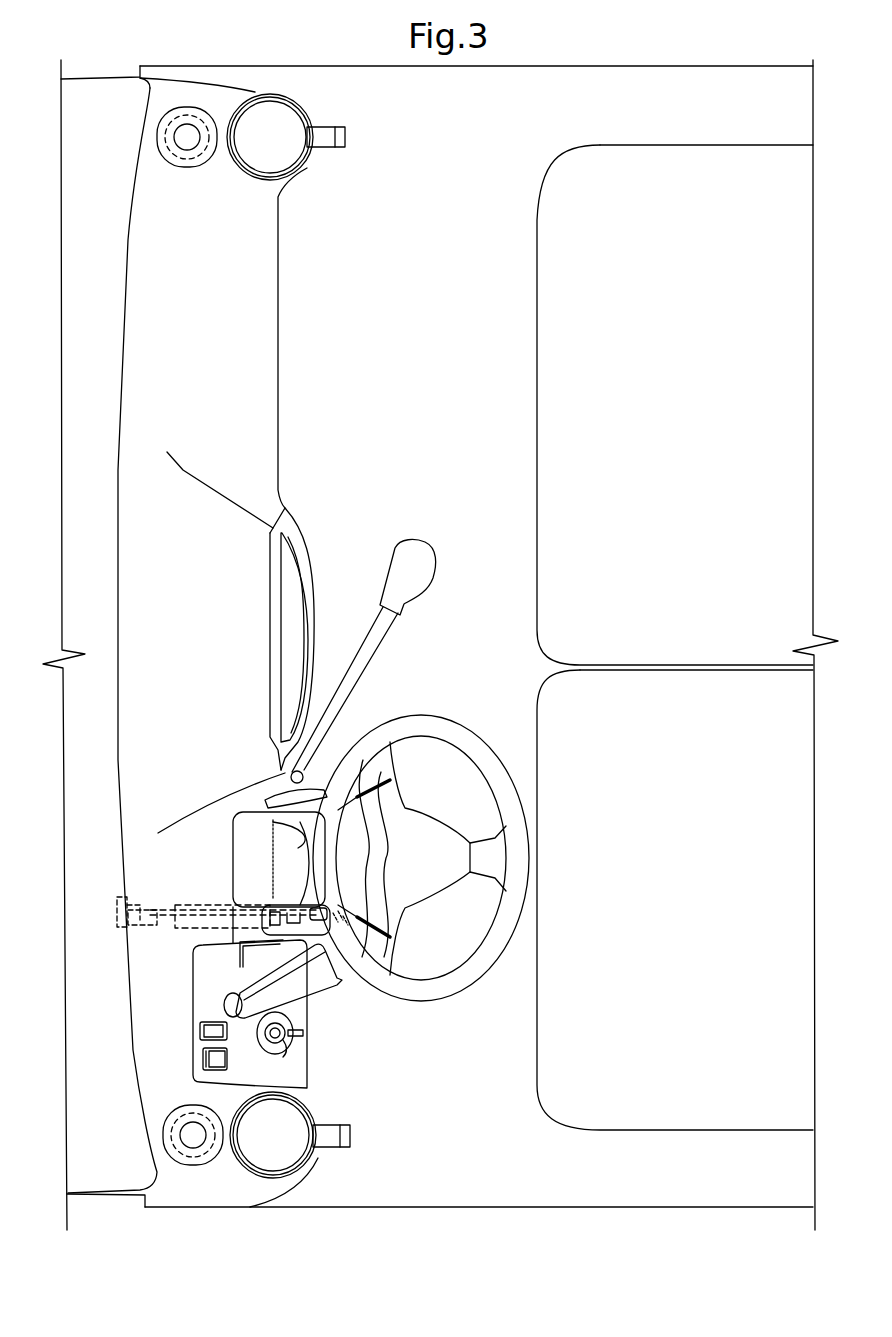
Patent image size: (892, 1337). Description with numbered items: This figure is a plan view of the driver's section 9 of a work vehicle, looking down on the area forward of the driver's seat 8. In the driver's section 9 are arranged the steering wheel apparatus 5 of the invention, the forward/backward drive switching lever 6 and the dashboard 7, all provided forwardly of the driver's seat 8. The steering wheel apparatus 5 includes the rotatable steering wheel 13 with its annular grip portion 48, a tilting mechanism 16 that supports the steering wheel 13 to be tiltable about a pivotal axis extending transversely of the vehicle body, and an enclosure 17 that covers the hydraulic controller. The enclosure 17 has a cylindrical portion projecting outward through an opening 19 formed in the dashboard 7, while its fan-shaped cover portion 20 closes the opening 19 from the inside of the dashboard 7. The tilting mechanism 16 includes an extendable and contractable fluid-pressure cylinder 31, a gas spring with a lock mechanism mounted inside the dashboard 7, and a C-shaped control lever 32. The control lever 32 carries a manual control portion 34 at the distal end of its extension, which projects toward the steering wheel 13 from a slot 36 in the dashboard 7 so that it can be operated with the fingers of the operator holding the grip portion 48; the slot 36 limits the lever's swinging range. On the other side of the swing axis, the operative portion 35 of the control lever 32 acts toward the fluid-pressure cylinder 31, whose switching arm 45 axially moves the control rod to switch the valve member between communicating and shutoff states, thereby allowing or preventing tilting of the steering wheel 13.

The steering wheel apparatus 5 is at (240, 733).
The forward/backward drive switching lever 6 is at (227, 997).
The dashboard 7 is at (262, 404).
The driver's seat 8 is at (548, 317).
The driver's section 9 is at (447, 1143).
The steering wheel 13 is at (510, 852).
The tilting mechanism 16 is at (340, 918).
The enclosure 17 is at (307, 858).
The opening 19 is at (325, 810).
The cover portion 20 is at (285, 887).
The fluid-pressure cylinder 31 is at (220, 935).
The control lever 32 is at (343, 933).
The manual control portion 34 is at (393, 937).
The operative portion 35 is at (190, 925).
The slot 36 is at (318, 922).
The switching arm 45 is at (157, 910).
The grip portion 48 is at (288, 797).